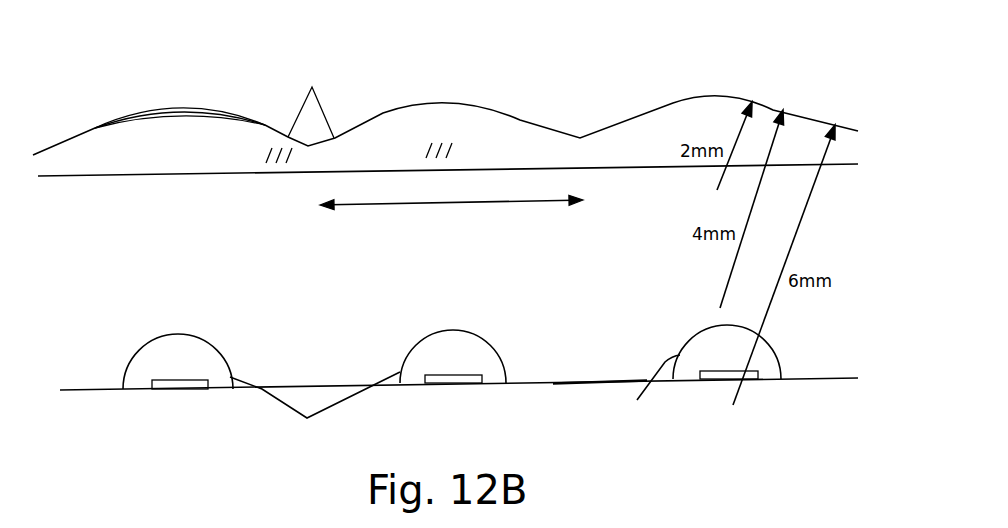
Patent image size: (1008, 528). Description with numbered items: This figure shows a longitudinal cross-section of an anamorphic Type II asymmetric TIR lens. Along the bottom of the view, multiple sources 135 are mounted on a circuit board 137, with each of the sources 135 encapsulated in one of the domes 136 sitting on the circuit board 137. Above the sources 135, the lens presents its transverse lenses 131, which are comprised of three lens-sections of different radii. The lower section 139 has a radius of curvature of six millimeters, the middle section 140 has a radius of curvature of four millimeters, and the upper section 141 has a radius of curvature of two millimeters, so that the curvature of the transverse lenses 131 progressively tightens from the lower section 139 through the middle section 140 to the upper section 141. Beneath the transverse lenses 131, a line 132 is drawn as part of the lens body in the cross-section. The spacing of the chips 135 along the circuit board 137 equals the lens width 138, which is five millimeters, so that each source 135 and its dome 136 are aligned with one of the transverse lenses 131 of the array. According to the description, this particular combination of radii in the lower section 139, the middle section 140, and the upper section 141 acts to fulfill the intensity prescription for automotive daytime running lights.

The transverse lenses 131 is at (632, 97).
The diffuser base line 132 is at (130, 177).
The sources 135 is at (187, 389).
The domes 136 is at (637, 400).
The circuit board 137 is at (90, 391).
The lens width 138 is at (375, 206).
The lower section 139 is at (312, 89).
The middle section 140 is at (122, 122).
The upper section 141 is at (175, 105).